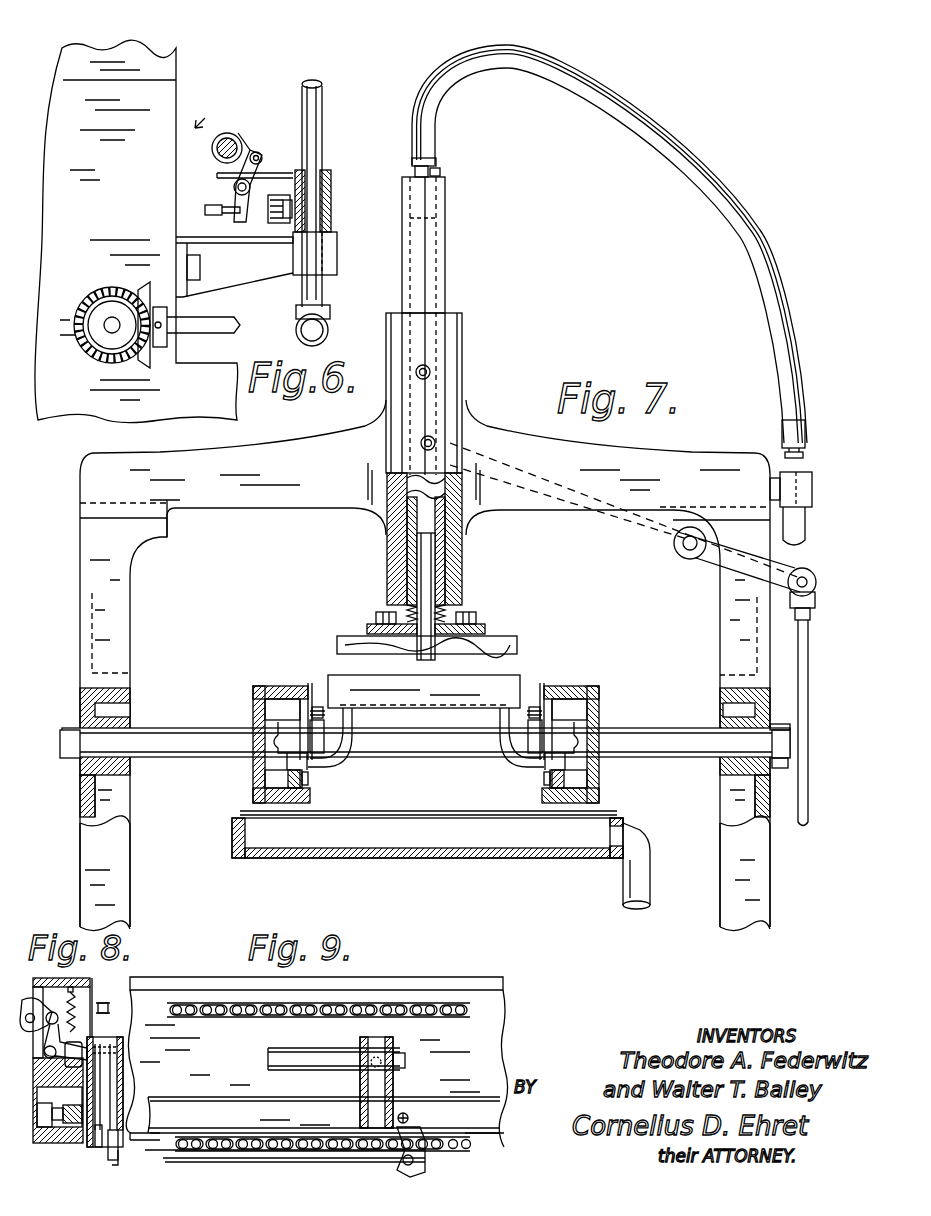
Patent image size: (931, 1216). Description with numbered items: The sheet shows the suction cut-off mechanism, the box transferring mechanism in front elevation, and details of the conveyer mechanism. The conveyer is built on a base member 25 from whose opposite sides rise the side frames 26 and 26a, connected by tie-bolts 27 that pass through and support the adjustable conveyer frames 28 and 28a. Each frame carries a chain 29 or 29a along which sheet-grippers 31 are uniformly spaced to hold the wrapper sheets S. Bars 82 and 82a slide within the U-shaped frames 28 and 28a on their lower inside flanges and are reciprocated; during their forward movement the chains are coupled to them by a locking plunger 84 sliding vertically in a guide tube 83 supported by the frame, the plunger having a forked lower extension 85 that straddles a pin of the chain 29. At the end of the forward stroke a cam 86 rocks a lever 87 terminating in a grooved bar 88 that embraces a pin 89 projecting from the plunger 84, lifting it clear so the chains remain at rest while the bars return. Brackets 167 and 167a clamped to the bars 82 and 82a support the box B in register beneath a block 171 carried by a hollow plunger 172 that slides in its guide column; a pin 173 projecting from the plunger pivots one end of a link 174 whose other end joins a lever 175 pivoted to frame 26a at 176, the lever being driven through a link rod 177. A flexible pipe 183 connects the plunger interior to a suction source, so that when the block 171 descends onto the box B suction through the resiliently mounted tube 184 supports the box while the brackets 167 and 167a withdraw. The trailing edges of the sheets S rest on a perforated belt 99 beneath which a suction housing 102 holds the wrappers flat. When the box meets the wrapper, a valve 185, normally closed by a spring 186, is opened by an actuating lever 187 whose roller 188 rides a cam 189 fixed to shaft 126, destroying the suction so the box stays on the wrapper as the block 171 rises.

In FIG. 6, the conveyer base member 25 is at (167, 95).
In FIG. 6, the cam 189 is at (223, 130).
In FIG. 6, the shaft 126 is at (233, 127).
In FIG. 6, the roller 188 is at (258, 155).
In FIG. 6, the actuating lever 187 is at (233, 178).
In FIG. 6, the valve 185 is at (293, 212).
In FIG. 6, the spring 186 is at (260, 230).
In FIG. 7, the flexible pipe 183 is at (628, 115).
In FIG. 7, the link 174 is at (430, 395).
In FIG. 7, the pin 173 is at (410, 375).
In FIG. 7, the lever 175 is at (500, 463).
In FIG. 7, the pivot 176 is at (688, 547).
In FIG. 7, the link rod 177 is at (798, 823).
In FIG. 7, the tube 184 is at (428, 577).
In FIG. 7, the hollow plunger 172 is at (440, 615).
In FIG. 7, the block 171 is at (497, 640).
In FIG. 7, the box B is at (340, 680).
In FIG. 7, the adjustable conveyer frame 28 is at (262, 685).
In FIG. 8, the adjustable conveyer frame 28 is at (90, 981).
In FIG. 9, the adjustable conveyer frame 28 is at (472, 984).
In FIG. 7, the adjustable conveyer frame 28a is at (600, 687).
In FIG. 7, the chain 29 is at (318, 707).
In FIG. 9, the chain 29 is at (197, 1018).
In FIG. 7, the chain 29a is at (532, 707).
In FIG. 7, the tie-bolts 27 is at (153, 735).
In FIG. 7, the bracket 167 is at (333, 768).
In FIG. 7, the bracket 167a is at (523, 767).
In FIG. 7, the bar 82 is at (307, 782).
In FIG. 8, the bar 82 is at (62, 1137).
In FIG. 9, the bar 82 is at (480, 1100).
In FIG. 7, the bar 82a is at (547, 790).
In FIG. 7, the sheet S is at (383, 817).
In FIG. 9, the sheet S is at (168, 1160).
In FIG. 7, the belt 99 is at (600, 817).
In FIG. 7, the housing 102 is at (543, 847).
In FIG. 7, the side frame 26 is at (90, 832).
In FIG. 7, the side frame 26a is at (728, 833).
In FIG. 8, the cam 86 is at (60, 1006).
In FIG. 8, the lever 87 is at (80, 1052).
In FIG. 8, the pin 89 is at (97, 1075).
In FIG. 9, the grooved bar 88 is at (272, 1056).
In FIG. 9, the locking plunger 84 is at (373, 1045).
In FIG. 9, the guide tube 83 is at (420, 1100).
In FIG. 9, the forked lower extension 85 is at (365, 1125).
In FIG. 9, the sheet-grippers 31 is at (432, 1152).